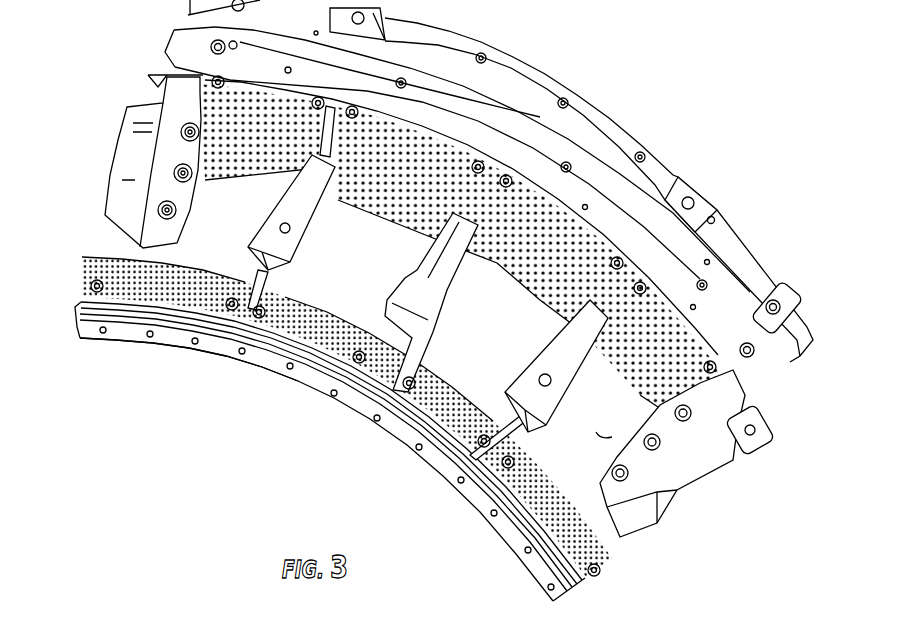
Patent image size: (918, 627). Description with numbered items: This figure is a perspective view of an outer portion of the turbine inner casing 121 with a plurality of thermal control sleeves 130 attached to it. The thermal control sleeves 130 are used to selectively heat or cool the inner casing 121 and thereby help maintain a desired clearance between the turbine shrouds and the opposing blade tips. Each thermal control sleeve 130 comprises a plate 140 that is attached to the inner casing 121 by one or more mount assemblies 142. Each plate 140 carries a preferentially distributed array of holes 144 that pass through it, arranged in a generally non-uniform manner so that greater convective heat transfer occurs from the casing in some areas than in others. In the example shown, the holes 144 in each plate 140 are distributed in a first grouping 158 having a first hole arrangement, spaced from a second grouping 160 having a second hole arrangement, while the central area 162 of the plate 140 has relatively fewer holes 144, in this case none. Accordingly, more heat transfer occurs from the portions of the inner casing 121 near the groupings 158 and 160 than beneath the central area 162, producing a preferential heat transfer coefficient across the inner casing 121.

The turbine inner casing 121 is at (106, 337).
The thermal control sleeve 130 is at (300, 390).
The plate 140 is at (118, 262).
The mount assembly 142 is at (712, 355).
The holes 144 is at (253, 152).
The first grouping 158 is at (240, 136).
The second grouping 160 is at (160, 273).
The central area 162 is at (200, 215).